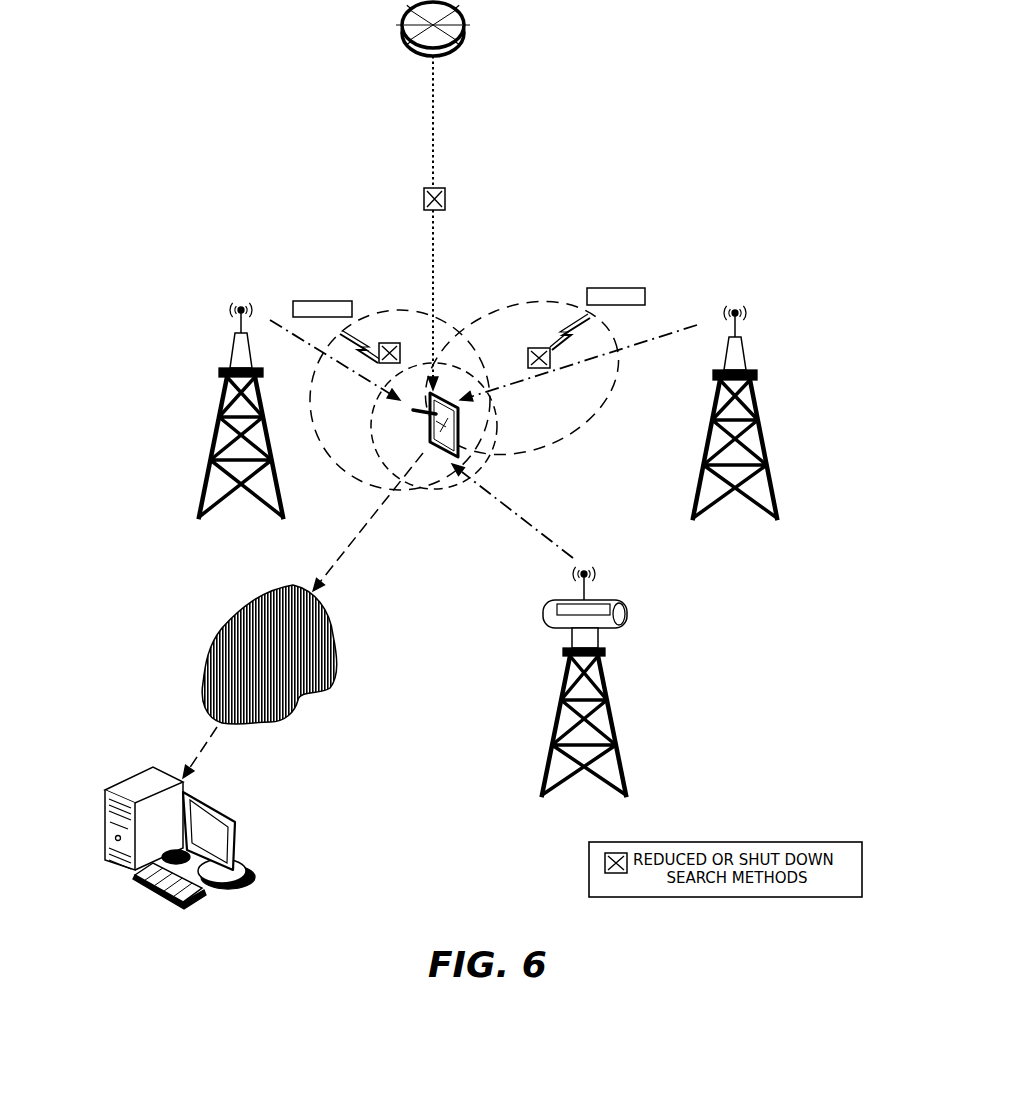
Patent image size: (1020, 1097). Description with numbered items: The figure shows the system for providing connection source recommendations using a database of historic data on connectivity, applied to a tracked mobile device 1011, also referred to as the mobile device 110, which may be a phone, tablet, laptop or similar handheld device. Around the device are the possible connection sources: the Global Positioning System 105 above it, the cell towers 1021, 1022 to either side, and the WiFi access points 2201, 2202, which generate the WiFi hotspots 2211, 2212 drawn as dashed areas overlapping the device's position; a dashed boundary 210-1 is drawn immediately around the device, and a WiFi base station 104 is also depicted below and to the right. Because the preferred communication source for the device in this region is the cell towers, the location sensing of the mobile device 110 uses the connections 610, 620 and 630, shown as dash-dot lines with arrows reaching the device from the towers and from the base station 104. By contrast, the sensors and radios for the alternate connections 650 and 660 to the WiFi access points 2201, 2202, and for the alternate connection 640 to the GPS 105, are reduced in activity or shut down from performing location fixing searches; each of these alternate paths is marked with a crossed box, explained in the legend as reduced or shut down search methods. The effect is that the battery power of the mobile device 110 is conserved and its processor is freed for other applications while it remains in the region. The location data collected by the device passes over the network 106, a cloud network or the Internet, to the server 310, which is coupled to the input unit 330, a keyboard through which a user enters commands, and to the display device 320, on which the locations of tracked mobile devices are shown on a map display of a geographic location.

The Global Positioning System 105 is at (420, 57).
The alternate connection to GPS 640 is at (436, 172).
The alternate connection to WiFi access point 660 is at (380, 342).
The alternate connection to WiFi access point 650 is at (585, 356).
The connection to cell tower 620 is at (270, 320).
The connection to cell tower 610 is at (697, 323).
The connection to cell tower 630 is at (555, 543).
The WiFi access point 2201 is at (330, 300).
The WiFi access point 2202 is at (630, 288).
The WiFi hotspot 2211 is at (424, 318).
The WiFi hotspot 2212 is at (498, 313).
The location area 210-1 is at (465, 368).
The mobile device 1011 is at (462, 413).
The mobile device 110 is at (444, 425).
The cell tower 1021 is at (224, 313).
The cell tower 1022 is at (742, 327).
The WiFi base station 104 is at (615, 628).
The network 106 is at (313, 688).
The server 310 is at (130, 780).
The display device 320 is at (229, 837).
The input unit 330 is at (180, 902).